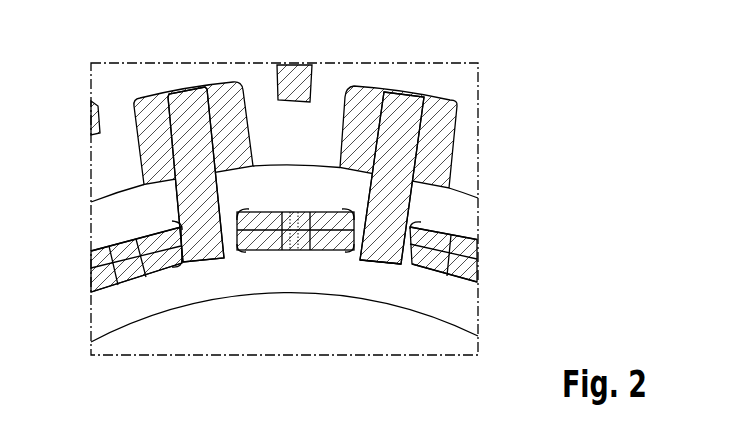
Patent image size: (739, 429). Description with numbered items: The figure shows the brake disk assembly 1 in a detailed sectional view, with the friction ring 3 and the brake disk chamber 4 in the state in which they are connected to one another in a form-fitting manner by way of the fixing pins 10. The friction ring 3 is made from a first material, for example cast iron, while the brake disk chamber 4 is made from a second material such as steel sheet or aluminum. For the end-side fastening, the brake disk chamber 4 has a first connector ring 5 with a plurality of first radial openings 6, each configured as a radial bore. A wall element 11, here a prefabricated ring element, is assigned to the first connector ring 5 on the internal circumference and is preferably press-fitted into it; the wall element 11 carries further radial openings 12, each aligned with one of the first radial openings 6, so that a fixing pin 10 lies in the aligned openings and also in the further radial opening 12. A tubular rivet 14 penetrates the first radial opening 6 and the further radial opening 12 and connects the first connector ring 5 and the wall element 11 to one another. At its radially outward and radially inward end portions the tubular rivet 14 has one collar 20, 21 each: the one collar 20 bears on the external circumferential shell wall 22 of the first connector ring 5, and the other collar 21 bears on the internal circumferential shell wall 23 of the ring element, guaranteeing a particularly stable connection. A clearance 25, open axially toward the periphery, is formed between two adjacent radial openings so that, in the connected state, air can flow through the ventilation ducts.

The brake disk assembly 1 is at (526, 65).
The friction ring 3 is at (342, 78).
The brake disk chamber 4 is at (392, 335).
The first connector ring 5 is at (460, 236).
The first radial openings 6 is at (198, 215).
The fixing pins 10 is at (400, 115).
The wall element 11 is at (437, 258).
The further radial openings 12 is at (198, 233).
The tubular rivet 14 is at (176, 266).
The collar 20 is at (429, 205).
The collar 21 is at (410, 285).
The external circumferential shell wall 22 is at (329, 203).
The internal circumferential shell wall 23 is at (320, 262).
The clearance 25 is at (294, 200).